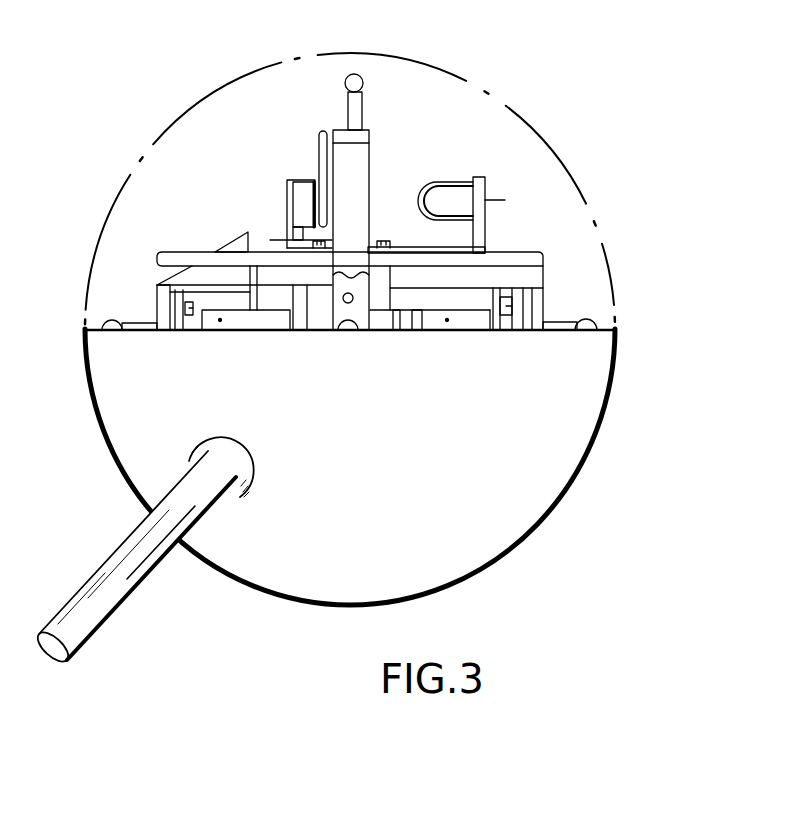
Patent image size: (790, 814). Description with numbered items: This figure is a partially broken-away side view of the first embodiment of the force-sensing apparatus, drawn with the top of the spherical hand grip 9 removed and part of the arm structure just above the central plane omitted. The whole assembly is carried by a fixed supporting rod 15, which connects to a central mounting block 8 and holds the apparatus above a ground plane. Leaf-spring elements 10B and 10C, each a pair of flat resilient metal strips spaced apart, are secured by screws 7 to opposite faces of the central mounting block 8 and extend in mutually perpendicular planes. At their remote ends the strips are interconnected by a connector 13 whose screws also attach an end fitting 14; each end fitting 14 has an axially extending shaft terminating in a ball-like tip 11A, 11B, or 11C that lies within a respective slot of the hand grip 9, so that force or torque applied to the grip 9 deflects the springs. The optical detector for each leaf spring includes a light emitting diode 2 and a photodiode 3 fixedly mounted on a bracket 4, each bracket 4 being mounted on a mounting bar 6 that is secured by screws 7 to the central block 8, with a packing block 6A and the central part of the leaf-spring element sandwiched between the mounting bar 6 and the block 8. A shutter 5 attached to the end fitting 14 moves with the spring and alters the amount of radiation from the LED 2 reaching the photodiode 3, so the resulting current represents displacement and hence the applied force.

The light emitting diode 2 is at (447, 188).
The photodiode 3 is at (300, 180).
The bracket 4 is at (487, 228).
The shutter 5 is at (320, 137).
The mounting bar 6 is at (543, 257).
The packing block 6A is at (322, 273).
The screws 7 is at (385, 240).
The central mounting block 8 is at (380, 302).
The hand grip 9 is at (598, 353).
The leaf-spring element 10B is at (478, 292).
The leaf-spring element 10C is at (357, 168).
The ball-like tip 11A is at (348, 332).
The ball-like tip 11B is at (110, 320).
The ball-like tip 11C is at (352, 86).
The connector 13 is at (515, 320).
The end fitting 14 is at (360, 138).
The supporting rod 15 is at (110, 602).